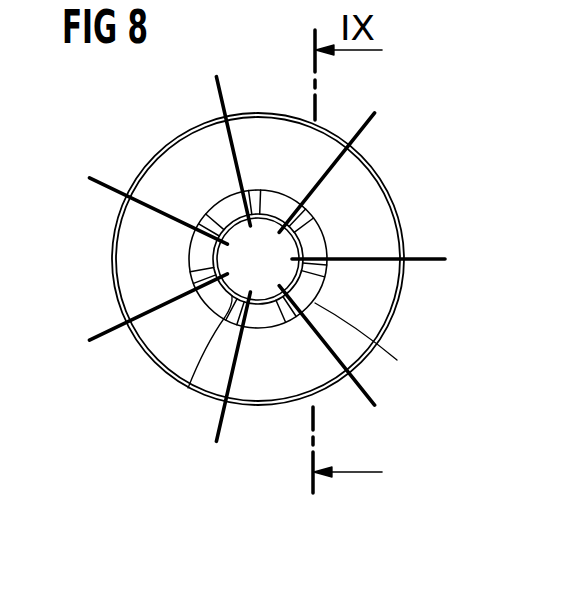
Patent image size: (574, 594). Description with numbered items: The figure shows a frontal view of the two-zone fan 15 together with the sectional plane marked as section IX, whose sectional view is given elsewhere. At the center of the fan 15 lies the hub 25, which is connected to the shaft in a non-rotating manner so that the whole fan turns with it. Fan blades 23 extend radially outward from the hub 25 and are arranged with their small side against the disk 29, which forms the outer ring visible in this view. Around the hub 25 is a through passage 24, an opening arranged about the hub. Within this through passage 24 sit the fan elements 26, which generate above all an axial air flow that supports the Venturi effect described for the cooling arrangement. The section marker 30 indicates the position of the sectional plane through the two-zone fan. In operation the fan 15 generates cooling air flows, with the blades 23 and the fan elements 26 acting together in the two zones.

The fan 15 is at (270, 262).
The fan blades 23 is at (222, 102).
The through passage 24 is at (312, 240).
The hub 25 is at (362, 351).
The fan elements 26 is at (187, 390).
The disk 29 is at (115, 250).
The section line IX 30 is at (360, 473).